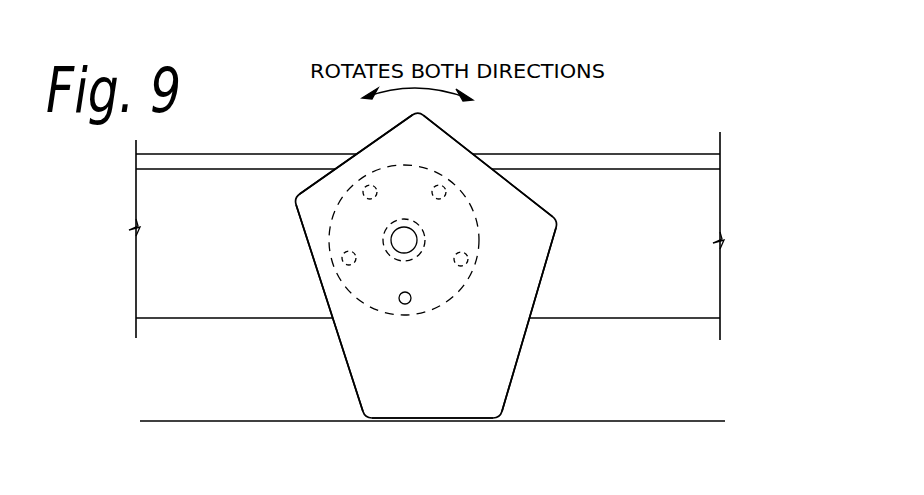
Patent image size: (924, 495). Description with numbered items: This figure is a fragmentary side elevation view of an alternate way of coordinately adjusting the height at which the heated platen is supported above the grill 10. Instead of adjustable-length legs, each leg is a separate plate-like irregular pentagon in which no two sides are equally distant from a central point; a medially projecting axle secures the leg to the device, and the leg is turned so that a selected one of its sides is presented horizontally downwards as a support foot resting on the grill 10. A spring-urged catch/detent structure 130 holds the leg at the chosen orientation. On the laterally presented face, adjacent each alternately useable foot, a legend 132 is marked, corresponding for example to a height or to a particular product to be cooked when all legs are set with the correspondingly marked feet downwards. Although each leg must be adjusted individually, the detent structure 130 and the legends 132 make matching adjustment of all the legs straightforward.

The grill 10 is at (550, 421).
The spring-urged catch/detent structure 130 is at (470, 258).
The legend 132 is at (408, 383).